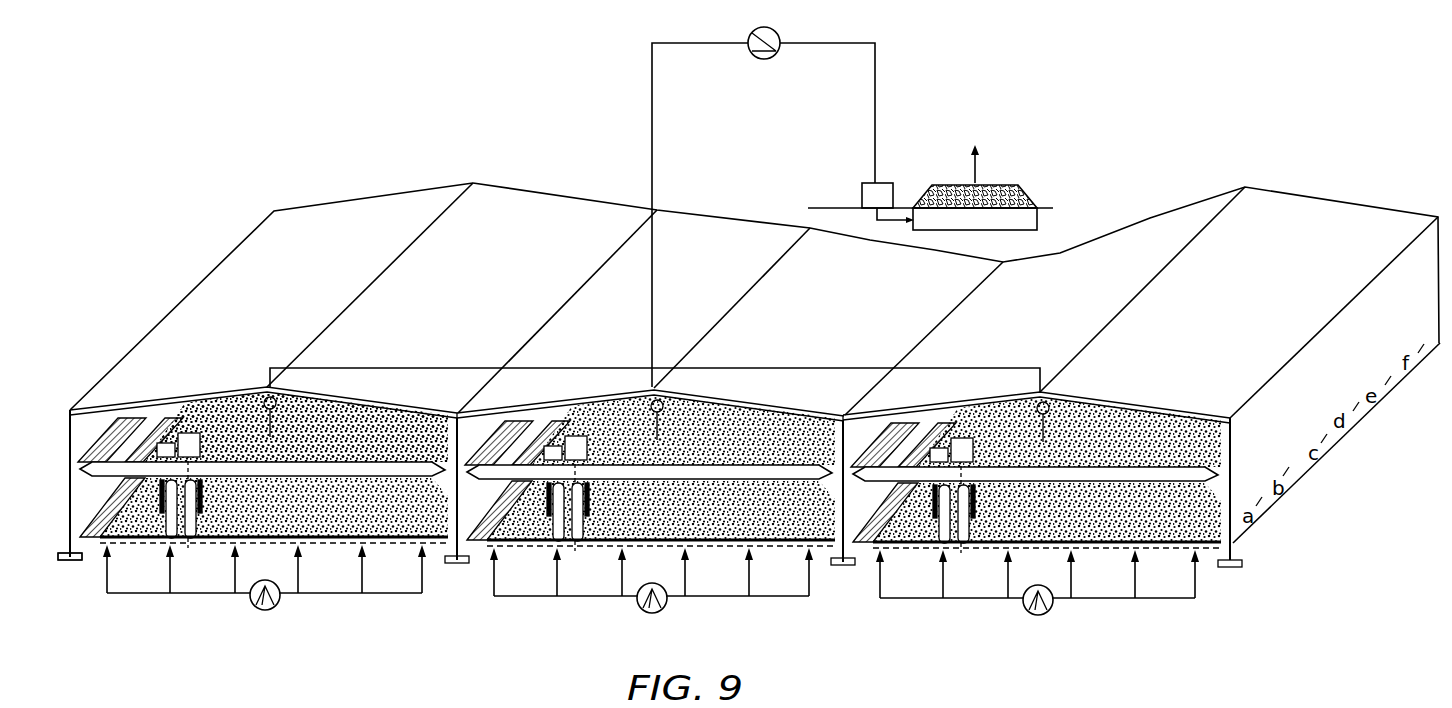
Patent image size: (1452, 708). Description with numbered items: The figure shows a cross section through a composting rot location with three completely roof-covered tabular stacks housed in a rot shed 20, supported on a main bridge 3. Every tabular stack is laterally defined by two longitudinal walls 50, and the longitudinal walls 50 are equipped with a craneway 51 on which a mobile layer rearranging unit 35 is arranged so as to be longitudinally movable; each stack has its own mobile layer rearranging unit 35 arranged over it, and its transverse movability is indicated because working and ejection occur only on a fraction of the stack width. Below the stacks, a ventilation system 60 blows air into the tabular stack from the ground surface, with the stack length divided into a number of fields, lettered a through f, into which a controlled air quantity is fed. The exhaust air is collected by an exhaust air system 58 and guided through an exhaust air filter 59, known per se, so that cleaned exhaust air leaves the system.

The main bridge 3 is at (327, 470).
The rot shed 20 is at (300, 417).
The mobile layer rearranging unit 35 is at (190, 445).
The longitudinal walls 50 is at (88, 540).
The craneway 51 is at (82, 468).
The exhaust air system 58 is at (652, 163).
The exhaust air filter 59 is at (1033, 193).
The ventilation system 60 is at (255, 606).